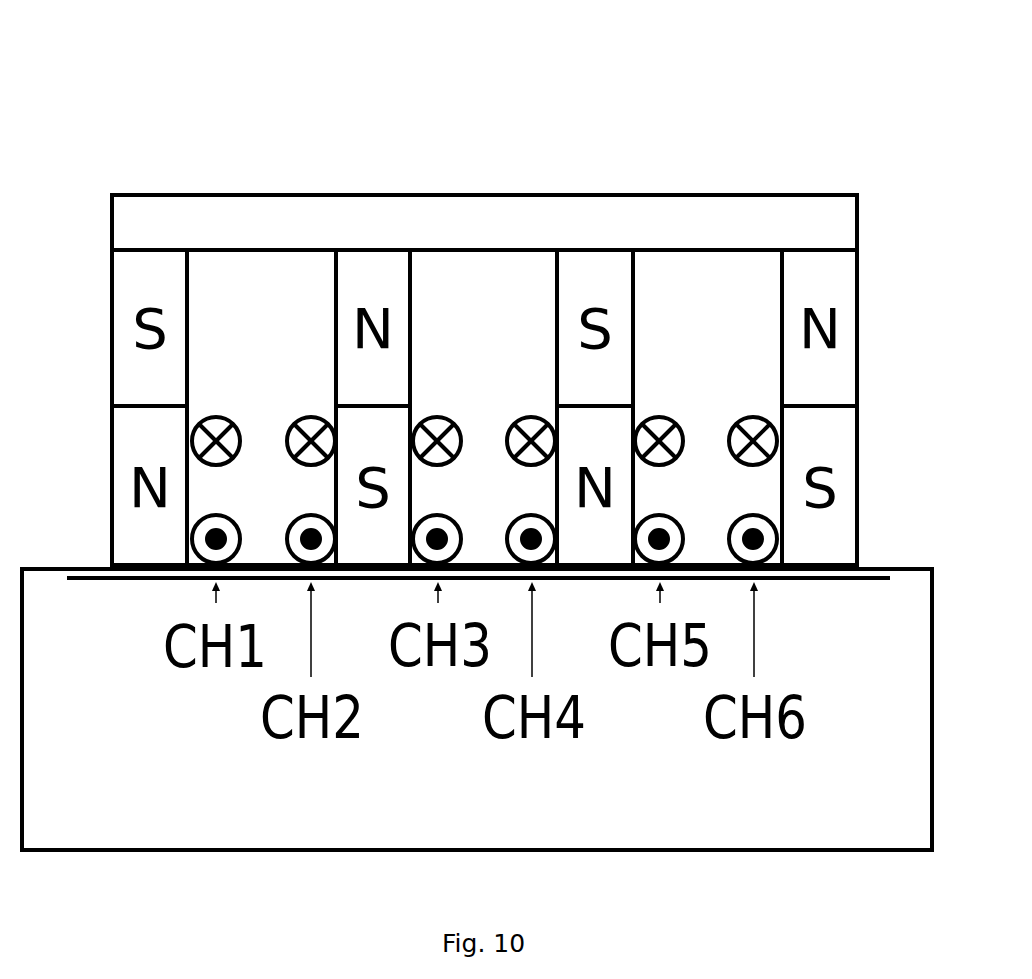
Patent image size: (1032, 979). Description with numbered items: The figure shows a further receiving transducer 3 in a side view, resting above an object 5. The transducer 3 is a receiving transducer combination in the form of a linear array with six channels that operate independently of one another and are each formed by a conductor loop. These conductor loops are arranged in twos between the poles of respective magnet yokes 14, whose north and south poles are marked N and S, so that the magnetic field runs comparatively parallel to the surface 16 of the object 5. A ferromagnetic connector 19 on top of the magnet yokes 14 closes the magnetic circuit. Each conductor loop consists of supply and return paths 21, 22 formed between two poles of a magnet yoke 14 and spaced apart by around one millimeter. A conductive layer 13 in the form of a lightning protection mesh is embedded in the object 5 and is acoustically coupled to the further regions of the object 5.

The transducer 3 is at (153, 146).
The object 5 is at (805, 813).
The conductive layer 13 is at (863, 580).
The magnet yoke 14 is at (260, 168).
The surface of the object 16 is at (913, 567).
The ferromagnetic connector 19 is at (802, 196).
The supply path 21 is at (297, 514).
The return path 22 is at (215, 416).